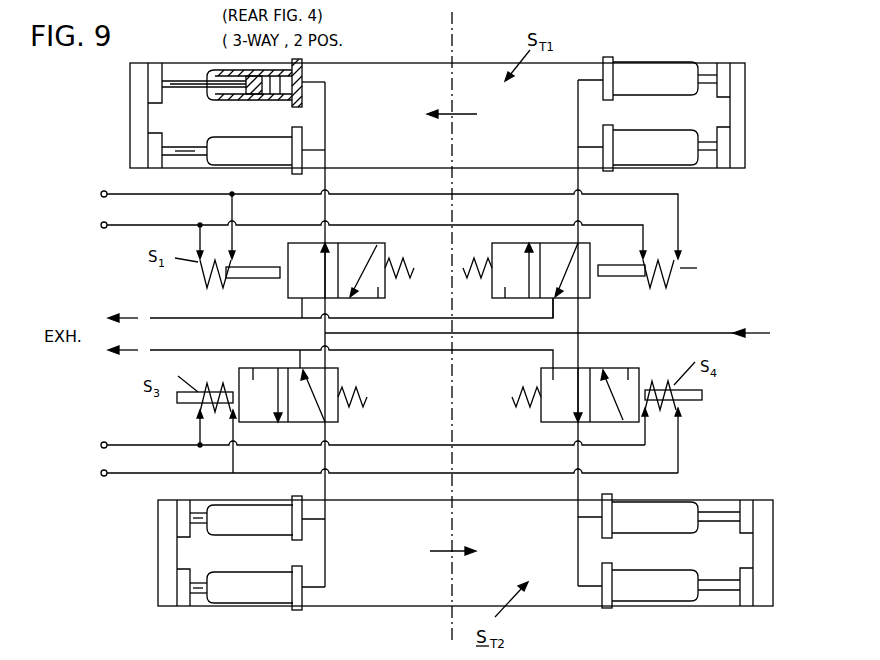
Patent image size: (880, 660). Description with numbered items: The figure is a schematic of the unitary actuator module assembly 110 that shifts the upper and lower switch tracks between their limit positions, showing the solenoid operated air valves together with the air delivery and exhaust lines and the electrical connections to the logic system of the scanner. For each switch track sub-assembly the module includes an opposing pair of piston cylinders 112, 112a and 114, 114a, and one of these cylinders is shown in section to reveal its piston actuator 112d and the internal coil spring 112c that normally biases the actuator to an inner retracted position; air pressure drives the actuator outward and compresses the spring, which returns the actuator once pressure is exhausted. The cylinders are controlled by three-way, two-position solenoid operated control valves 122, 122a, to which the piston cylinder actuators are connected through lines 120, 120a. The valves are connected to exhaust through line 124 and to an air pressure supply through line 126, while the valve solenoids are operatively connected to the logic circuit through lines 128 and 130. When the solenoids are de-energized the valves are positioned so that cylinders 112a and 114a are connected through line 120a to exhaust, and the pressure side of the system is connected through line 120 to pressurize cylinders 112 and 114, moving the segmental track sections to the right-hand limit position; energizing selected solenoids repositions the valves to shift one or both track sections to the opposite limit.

The unitary actuator module assembly 110 is at (708, 244).
The piston cylinder 112 is at (243, 145).
The piston cylinder 112a is at (645, 88).
The internal coil spring 112c is at (214, 100).
The piston actuator 112d is at (183, 80).
The piston cylinder 114 is at (237, 527).
The piston cylinder 114a is at (648, 520).
The line 120 is at (333, 182).
The line 120a is at (575, 185).
The solenoid operated control valve 122 is at (382, 249).
The solenoid operated control valve 122a is at (491, 297).
The exhaust line 124 is at (171, 307).
The air pressure supply line 126 is at (664, 329).
The electrical line 128 is at (99, 201).
The electrical line 130 is at (99, 450).